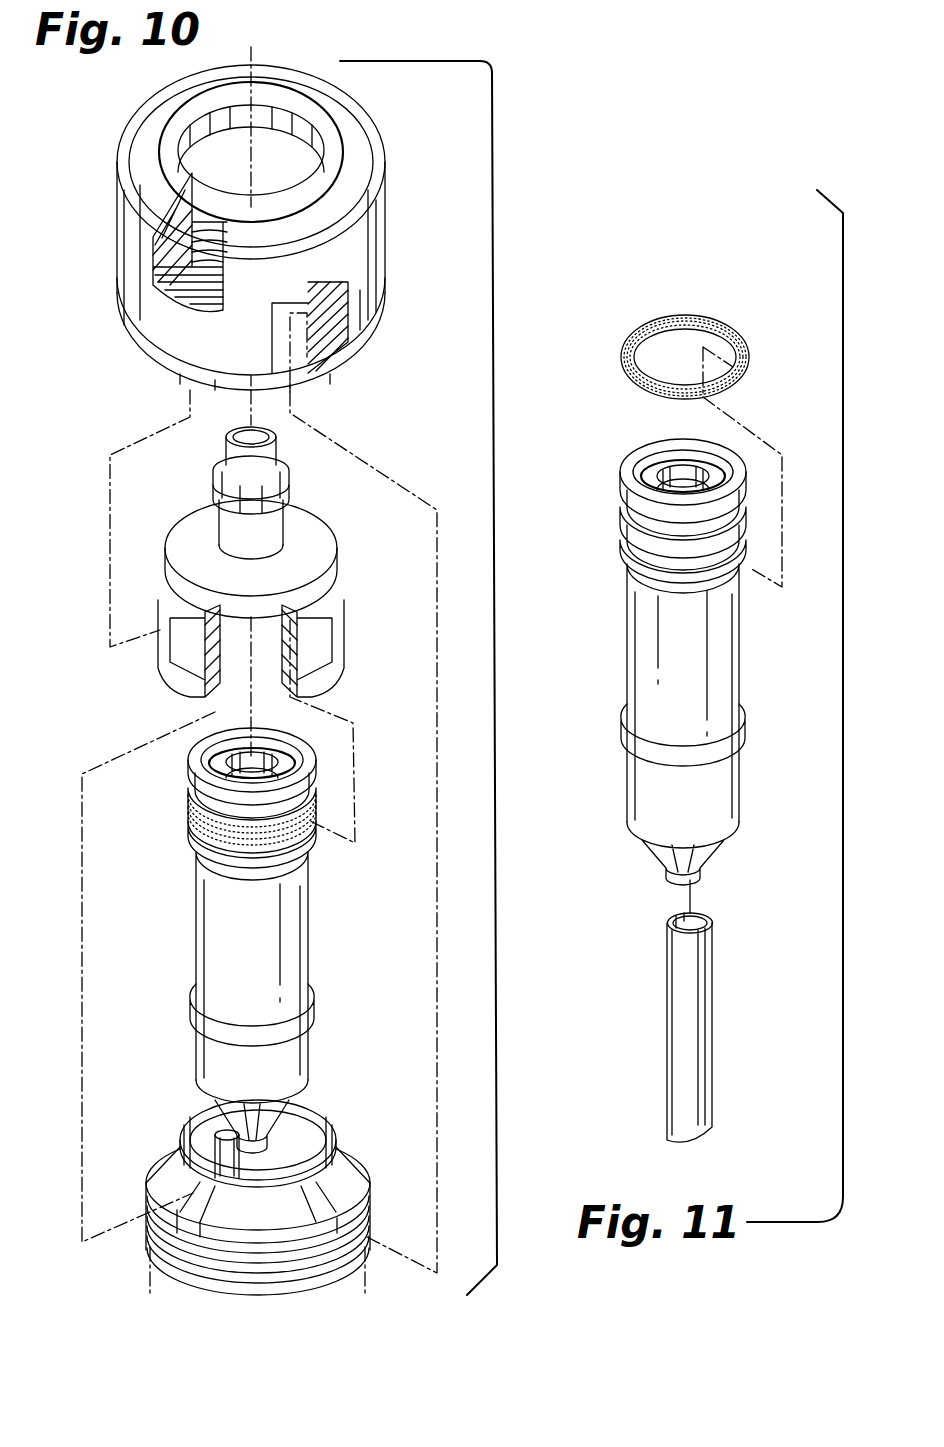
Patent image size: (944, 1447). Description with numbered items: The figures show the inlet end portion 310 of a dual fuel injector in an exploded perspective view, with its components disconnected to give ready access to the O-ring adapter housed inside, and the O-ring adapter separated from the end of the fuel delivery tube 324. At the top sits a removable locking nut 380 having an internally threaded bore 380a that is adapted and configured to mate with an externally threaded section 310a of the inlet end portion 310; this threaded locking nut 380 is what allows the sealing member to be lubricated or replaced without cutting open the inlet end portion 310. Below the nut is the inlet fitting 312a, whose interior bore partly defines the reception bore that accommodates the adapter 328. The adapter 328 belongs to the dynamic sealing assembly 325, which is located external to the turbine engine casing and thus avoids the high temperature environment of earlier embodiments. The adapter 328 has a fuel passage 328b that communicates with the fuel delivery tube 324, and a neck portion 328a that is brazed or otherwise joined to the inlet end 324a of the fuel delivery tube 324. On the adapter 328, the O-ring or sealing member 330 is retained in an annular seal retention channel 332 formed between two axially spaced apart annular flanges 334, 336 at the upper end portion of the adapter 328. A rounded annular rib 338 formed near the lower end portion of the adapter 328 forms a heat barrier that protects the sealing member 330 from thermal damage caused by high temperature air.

In FIG. 10, the inlet end portion 310 is at (432, 297).
In FIG. 10, the externally threaded section 310a is at (367, 1227).
In FIG. 10, the inlet fitting 312a is at (158, 543).
In FIG. 11, the fuel delivery tube 324 is at (693, 1009).
In FIG. 10, the inlet end 324a is at (247, 1162).
In FIG. 11, the inlet end 324a is at (708, 915).
In FIG. 11, the dynamic sealing assembly 325 is at (587, 353).
In FIG. 10, the adapter 328 is at (258, 936).
In FIG. 11, the adapter 328 is at (677, 644).
In FIG. 10, the neck portion 328a is at (293, 1143).
In FIG. 11, the neck portion 328a is at (667, 840).
In FIG. 10, the fuel passage 328b is at (240, 760).
In FIG. 11, the fuel passage 328b is at (673, 475).
In FIG. 10, the O-ring 330 is at (188, 820).
In FIG. 11, the O-ring 330 is at (712, 318).
In FIG. 10, the annular seal retention channel 332 is at (252, 795).
In FIG. 11, the annular seal retention channel 332 is at (650, 548).
In FIG. 10, the annular flange 334 is at (320, 787).
In FIG. 11, the annular flange 334 is at (620, 493).
In FIG. 10, the annular flange 336 is at (193, 857).
In FIG. 11, the annular flange 336 is at (740, 592).
In FIG. 10, the rounded annular rib 338 is at (197, 1003).
In FIG. 11, the rounded annular rib 338 is at (630, 730).
In FIG. 10, the locking nut 380 is at (221, 238).
In FIG. 10, the internally threaded bore 380a is at (300, 350).